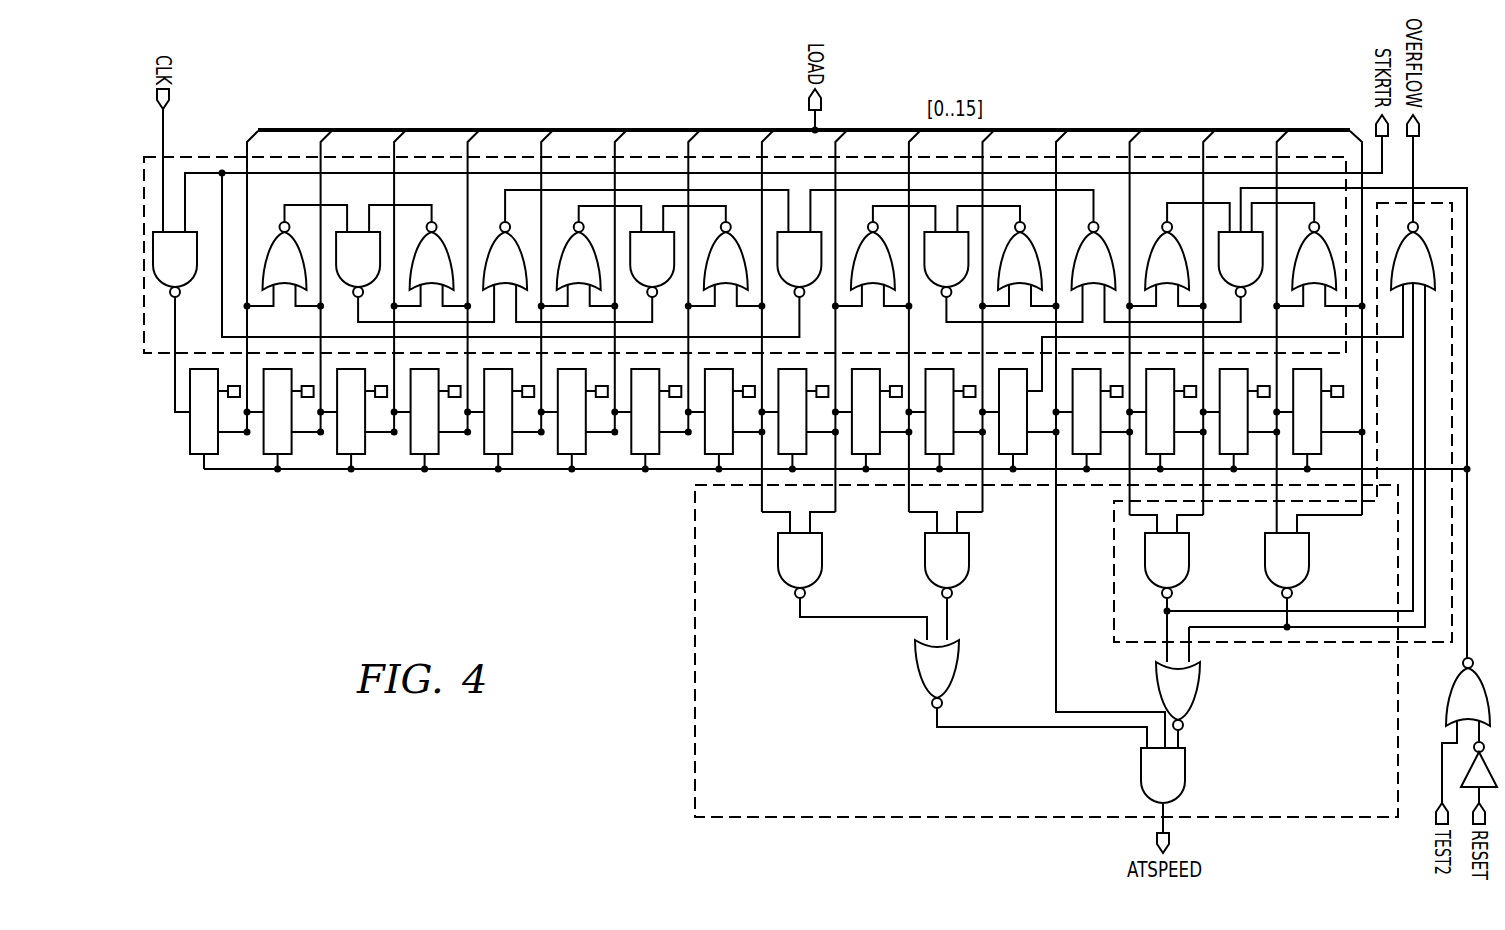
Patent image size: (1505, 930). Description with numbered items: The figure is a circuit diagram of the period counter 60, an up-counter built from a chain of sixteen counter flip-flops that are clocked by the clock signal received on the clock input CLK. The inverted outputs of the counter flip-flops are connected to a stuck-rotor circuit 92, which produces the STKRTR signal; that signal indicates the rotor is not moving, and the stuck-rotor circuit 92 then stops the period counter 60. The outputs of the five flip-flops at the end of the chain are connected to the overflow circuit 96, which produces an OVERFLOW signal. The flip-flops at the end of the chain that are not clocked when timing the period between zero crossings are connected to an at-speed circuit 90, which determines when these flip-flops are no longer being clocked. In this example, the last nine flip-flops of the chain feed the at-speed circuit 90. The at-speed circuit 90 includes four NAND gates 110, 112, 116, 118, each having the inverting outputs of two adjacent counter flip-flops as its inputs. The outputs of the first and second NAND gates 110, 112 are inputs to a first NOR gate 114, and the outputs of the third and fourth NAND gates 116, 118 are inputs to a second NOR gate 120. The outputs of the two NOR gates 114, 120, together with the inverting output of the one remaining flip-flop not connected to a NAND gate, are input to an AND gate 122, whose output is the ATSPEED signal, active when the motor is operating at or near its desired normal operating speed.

The period counter 60 is at (513, 548).
The at-speed circuit 90 is at (795, 771).
The stuck-rotor circuit 92 is at (222, 155).
The overflow circuit 96 is at (1312, 644).
The first NAND gate 110 is at (778, 552).
The second NAND gate 112 is at (925, 552).
The first NOR gate 114 is at (914, 672).
The third NAND gate 116 is at (1189, 552).
The fourth NAND gate 118 is at (1310, 552).
The second NOR gate 120 is at (1200, 690).
The AND gate 122 is at (1185, 770).